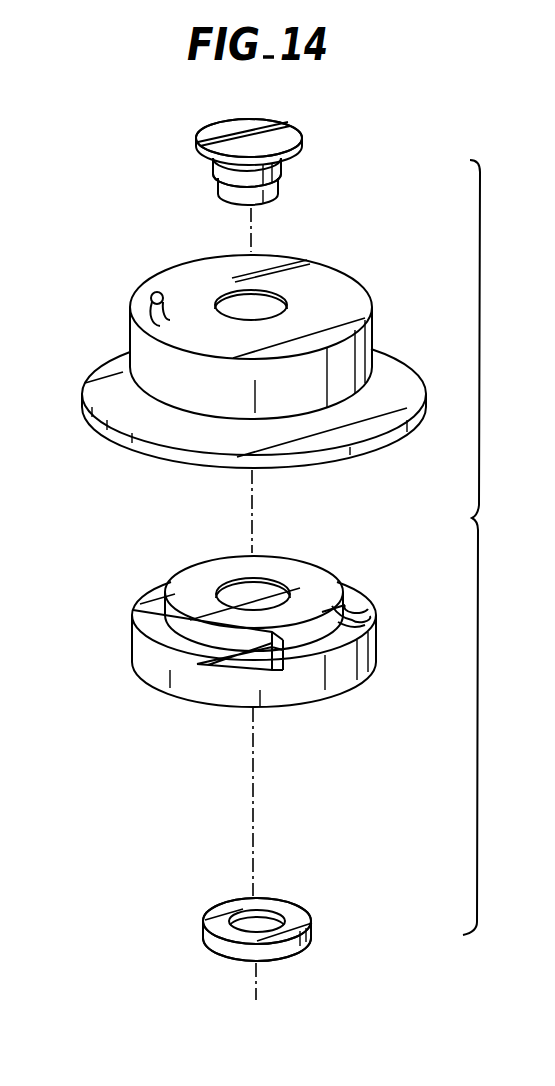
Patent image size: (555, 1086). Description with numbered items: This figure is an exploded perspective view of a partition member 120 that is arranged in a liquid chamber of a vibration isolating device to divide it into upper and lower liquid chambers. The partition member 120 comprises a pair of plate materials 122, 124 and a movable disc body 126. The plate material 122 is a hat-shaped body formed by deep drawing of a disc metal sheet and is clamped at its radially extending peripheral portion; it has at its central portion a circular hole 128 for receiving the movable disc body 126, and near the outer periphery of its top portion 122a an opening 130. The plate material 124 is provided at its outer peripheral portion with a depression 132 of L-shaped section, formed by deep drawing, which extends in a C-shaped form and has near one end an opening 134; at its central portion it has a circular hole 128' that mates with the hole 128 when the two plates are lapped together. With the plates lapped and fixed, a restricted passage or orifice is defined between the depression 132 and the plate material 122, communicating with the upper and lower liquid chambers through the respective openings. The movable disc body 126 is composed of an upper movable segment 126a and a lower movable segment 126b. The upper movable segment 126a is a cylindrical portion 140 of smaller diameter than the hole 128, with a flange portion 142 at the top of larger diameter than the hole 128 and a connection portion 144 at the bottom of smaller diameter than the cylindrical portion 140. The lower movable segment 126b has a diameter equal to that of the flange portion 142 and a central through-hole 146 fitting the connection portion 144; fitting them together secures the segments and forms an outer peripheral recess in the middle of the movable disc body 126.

The partition member 120 is at (522, 533).
The plate material 122 is at (95, 358).
The top portion 122a is at (348, 301).
The plate material 124 is at (373, 670).
The movable disc body 126 is at (282, 126).
The upper movable segment 126a is at (402, 135).
The lower movable segment 126b is at (313, 922).
The circular hole 128 is at (295, 268).
The circular hole 128' is at (286, 563).
The opening 130 is at (158, 293).
The depression 132 is at (146, 608).
The opening 134 is at (367, 610).
The cylindrical portion 140 is at (221, 182).
The flange portion 142 is at (300, 148).
The connection portion 144 is at (277, 195).
The through-hole 146 is at (275, 905).